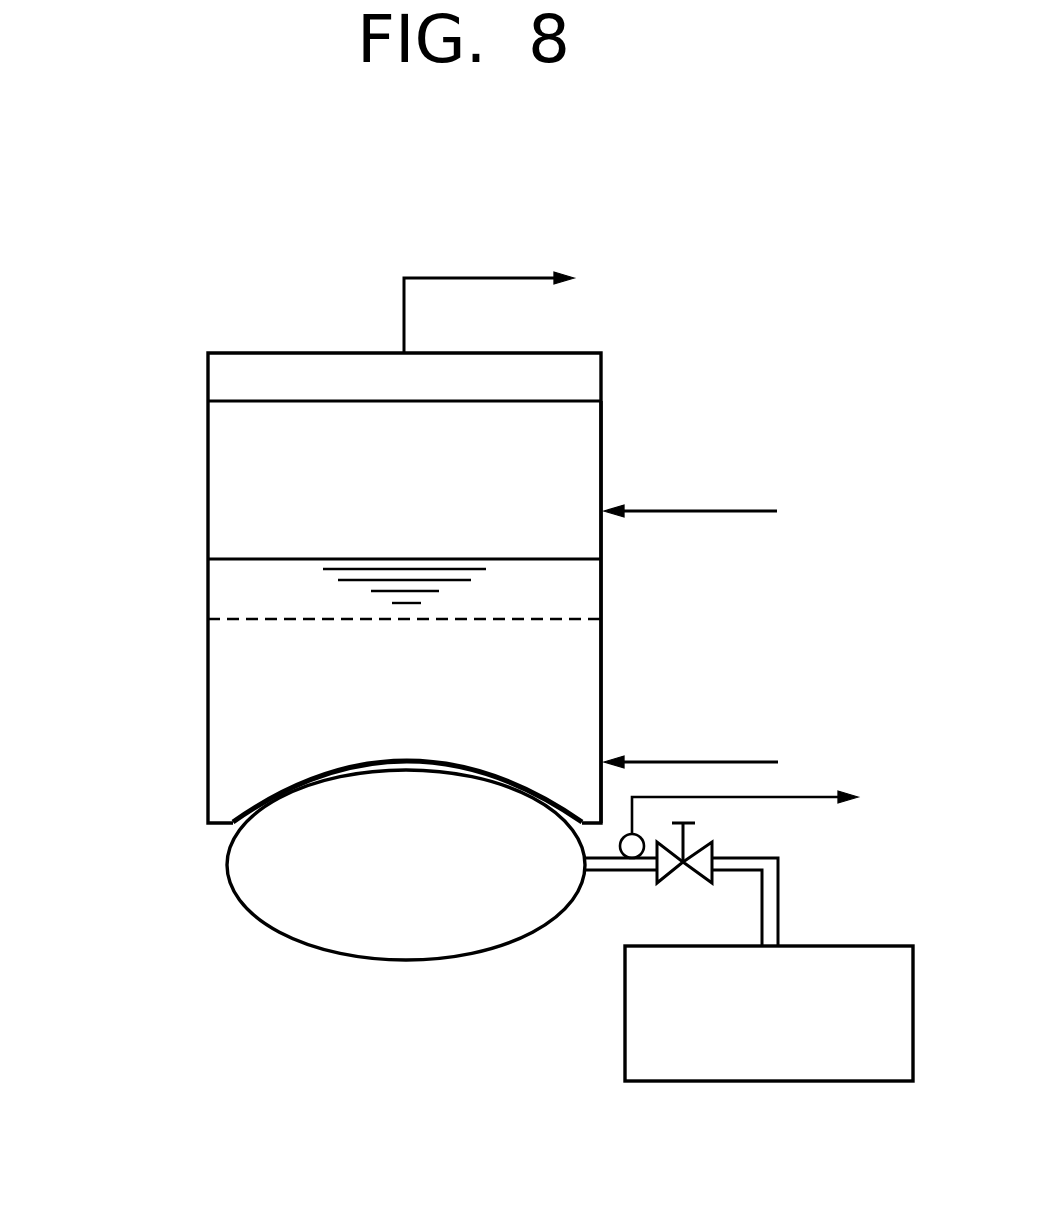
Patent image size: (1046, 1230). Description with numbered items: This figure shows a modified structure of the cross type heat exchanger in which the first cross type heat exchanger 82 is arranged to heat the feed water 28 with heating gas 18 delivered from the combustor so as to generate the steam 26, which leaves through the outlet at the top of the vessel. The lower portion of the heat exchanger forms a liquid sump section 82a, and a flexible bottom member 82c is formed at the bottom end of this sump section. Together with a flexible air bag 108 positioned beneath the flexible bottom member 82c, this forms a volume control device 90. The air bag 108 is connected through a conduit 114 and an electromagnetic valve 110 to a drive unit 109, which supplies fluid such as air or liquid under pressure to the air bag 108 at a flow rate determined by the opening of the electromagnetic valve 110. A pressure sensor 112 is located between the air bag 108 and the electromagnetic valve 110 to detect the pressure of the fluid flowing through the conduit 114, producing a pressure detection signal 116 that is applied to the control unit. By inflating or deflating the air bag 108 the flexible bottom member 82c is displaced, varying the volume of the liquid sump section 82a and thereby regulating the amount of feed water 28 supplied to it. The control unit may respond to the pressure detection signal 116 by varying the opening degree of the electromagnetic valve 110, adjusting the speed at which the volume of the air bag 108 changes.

The first cross type heat exchanger 82 is at (274, 352).
The liquid sump section 82a is at (582, 668).
The flexible bottom member 82c is at (284, 785).
The steam 26 is at (464, 278).
The heating gas 18 is at (703, 510).
The feed water 28 is at (690, 760).
The volume control device 90 is at (231, 899).
The flexible air bag 108 is at (391, 962).
The conduit 114 is at (588, 880).
The electromagnetic valve 110 is at (712, 848).
The pressure sensor 112 is at (630, 860).
The pressure detection signal 116 is at (816, 797).
The drive unit 109 is at (868, 945).